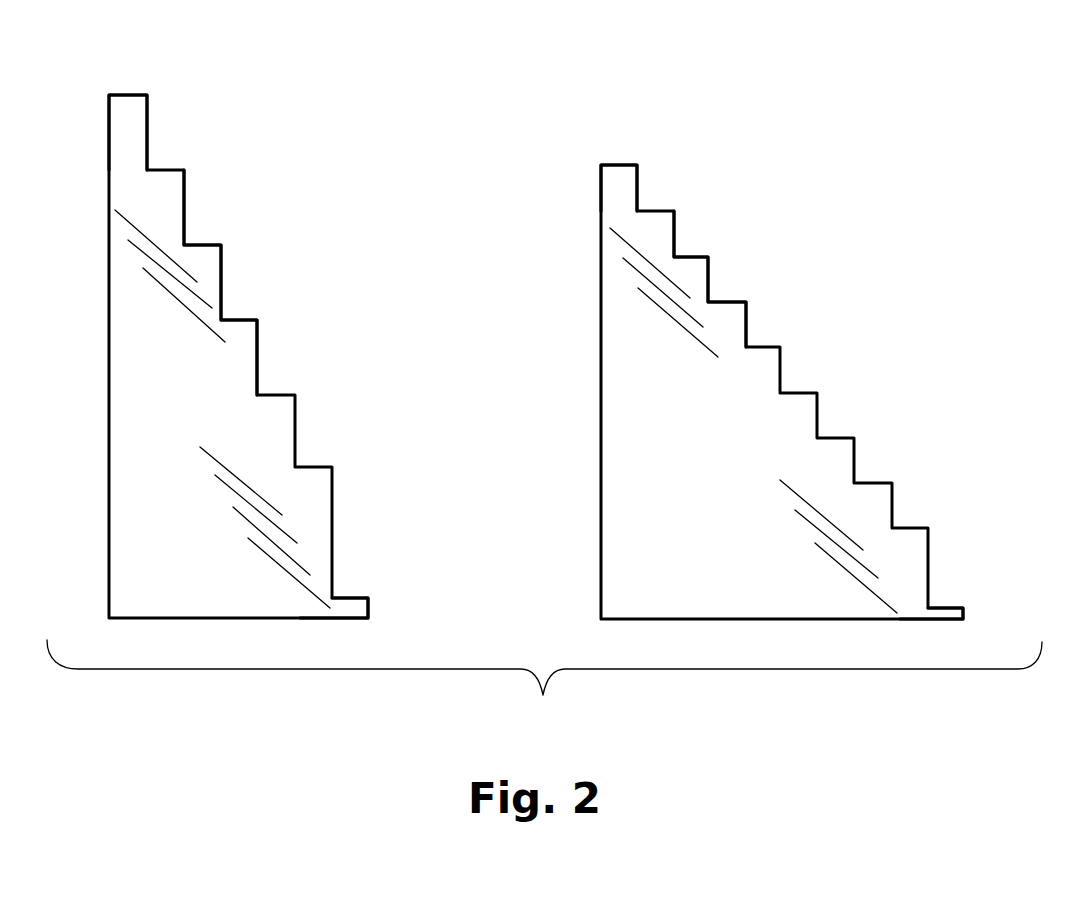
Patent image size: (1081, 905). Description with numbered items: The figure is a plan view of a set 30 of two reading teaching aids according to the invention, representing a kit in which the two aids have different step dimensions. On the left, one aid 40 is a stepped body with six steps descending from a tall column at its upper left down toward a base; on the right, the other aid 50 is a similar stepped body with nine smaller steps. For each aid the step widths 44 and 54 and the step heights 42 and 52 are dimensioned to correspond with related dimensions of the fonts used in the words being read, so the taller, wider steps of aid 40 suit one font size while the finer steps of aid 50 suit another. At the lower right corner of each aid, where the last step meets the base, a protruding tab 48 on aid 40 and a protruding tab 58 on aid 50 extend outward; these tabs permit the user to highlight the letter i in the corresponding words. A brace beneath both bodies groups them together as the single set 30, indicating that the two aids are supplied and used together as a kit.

The set 30 is at (790, 138).
The aid 40 is at (194, 402).
The step heights 42 is at (184, 195).
The step widths 44 is at (123, 95).
The protruding tab 48 is at (355, 598).
The aid 50 is at (743, 495).
The step heights 52 is at (674, 227).
The step widths 54 is at (615, 165).
The protruding tab 58 is at (945, 608).